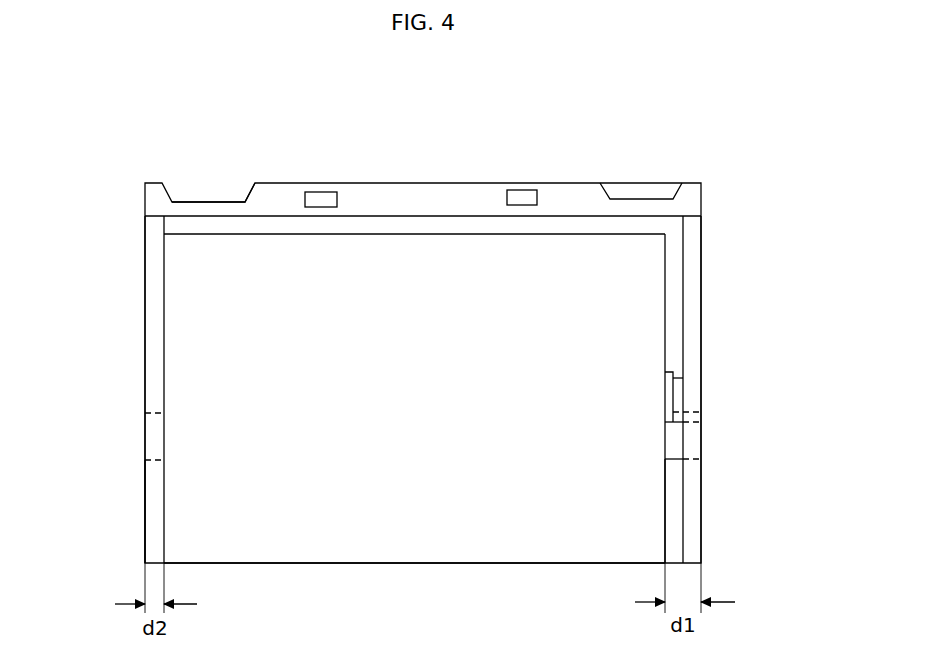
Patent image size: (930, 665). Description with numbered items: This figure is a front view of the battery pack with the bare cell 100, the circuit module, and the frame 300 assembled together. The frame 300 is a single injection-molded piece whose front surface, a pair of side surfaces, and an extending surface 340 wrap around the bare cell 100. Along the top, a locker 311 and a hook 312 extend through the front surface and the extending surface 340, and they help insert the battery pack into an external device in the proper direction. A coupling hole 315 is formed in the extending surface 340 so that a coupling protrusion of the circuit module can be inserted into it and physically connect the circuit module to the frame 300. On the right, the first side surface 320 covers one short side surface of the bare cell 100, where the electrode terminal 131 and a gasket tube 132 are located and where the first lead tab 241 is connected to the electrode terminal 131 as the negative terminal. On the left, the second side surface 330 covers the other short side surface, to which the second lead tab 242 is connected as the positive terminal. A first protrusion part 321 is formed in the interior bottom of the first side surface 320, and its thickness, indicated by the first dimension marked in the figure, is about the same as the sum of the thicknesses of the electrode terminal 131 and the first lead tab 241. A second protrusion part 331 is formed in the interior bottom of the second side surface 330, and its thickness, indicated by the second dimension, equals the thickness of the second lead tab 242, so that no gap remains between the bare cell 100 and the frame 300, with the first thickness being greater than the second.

The bare cell 100 is at (422, 540).
The electrode terminal 131 is at (678, 389).
The gasket tube 132 is at (700, 422).
The first lead tab 241 is at (692, 253).
The second lead tab 242 is at (150, 256).
The frame 300 is at (137, 178).
The locker 311 is at (638, 190).
The hook 312 is at (208, 200).
The coupling hole 315 is at (520, 196).
The first side surface 320 is at (702, 290).
The first protrusion part 321 is at (675, 515).
The second side surface 330 is at (147, 427).
The second protrusion part 331 is at (152, 507).
The extending surface 340 is at (396, 222).